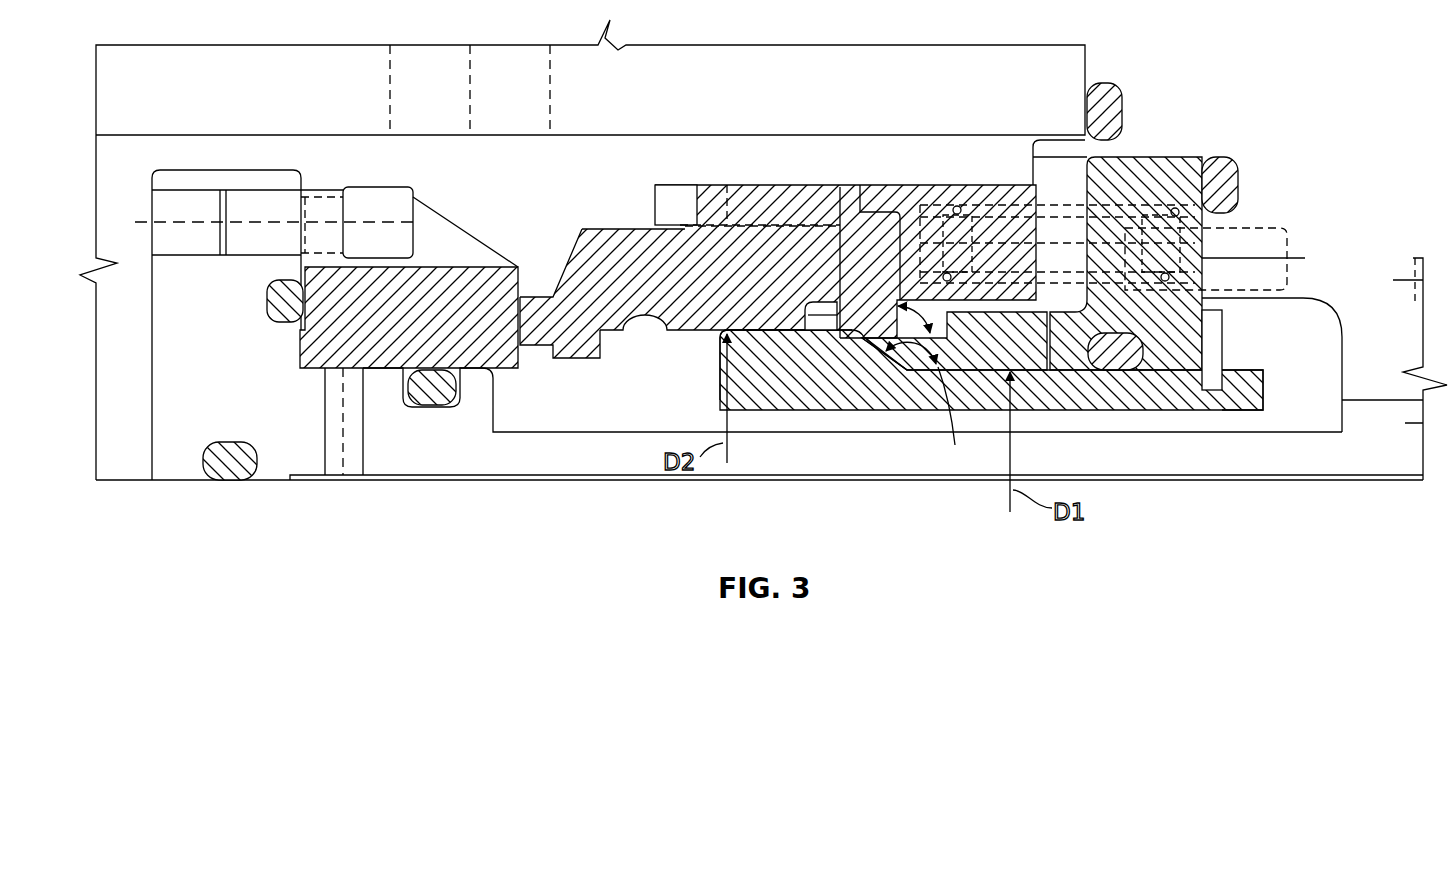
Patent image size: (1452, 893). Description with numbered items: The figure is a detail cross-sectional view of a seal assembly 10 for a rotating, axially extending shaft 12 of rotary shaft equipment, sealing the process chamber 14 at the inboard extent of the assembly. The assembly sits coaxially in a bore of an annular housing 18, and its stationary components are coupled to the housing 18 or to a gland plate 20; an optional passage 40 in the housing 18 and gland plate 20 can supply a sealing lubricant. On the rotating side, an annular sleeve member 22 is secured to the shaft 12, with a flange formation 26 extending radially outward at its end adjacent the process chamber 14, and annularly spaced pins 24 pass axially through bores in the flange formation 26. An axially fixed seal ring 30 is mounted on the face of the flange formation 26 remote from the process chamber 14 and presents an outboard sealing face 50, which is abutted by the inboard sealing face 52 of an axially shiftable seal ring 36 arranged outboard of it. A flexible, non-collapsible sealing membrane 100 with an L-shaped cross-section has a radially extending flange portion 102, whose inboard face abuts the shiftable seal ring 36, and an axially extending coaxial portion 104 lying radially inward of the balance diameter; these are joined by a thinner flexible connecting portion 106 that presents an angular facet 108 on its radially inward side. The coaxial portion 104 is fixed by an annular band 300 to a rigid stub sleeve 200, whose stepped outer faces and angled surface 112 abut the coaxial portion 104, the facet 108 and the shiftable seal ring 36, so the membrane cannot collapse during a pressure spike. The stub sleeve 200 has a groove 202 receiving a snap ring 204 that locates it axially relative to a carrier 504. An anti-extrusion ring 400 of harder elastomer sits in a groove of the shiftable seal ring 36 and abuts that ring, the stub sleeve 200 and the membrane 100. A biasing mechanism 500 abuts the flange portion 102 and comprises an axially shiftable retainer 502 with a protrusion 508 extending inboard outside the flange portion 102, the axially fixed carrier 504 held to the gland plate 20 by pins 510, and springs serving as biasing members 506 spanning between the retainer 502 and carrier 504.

The seal assembly 10 is at (225, 126).
The shaft 12 is at (531, 528).
The process chamber 14 is at (138, 399).
The housing 18 is at (669, 81).
The gland plate 20 is at (1356, 91).
The sleeve member 22 is at (445, 454).
The pins 24 is at (260, 249).
The flange formation 26 is at (243, 365).
The axially fixed seal ring 30 is at (418, 288).
The axially shiftable seal ring 36 is at (660, 318).
The passage 40 is at (524, 99).
The outboard sealing face 50 is at (510, 334).
The inboard sealing face 52 is at (523, 307).
The sealing membrane 100 is at (843, 232).
The flange portion 102 is at (888, 293).
The coaxial portion 104 is at (1004, 370).
The flexible connecting portion 106 is at (886, 356).
The angular facet 108 is at (786, 402).
The angled surface 112 is at (812, 402).
The stub sleeve 200 is at (1130, 393).
The groove 202 is at (1213, 393).
The snap ring 204 is at (1222, 340).
The band 300 is at (1027, 327).
The anti-extrusion ring 400 is at (823, 328).
The biasing mechanism 500 is at (1135, 116).
The retainer 502 is at (908, 222).
The carrier 504 is at (1182, 165).
The biasing members 506 is at (1070, 232).
The protrusion 508 is at (863, 193).
The pins 510 is at (1277, 228).